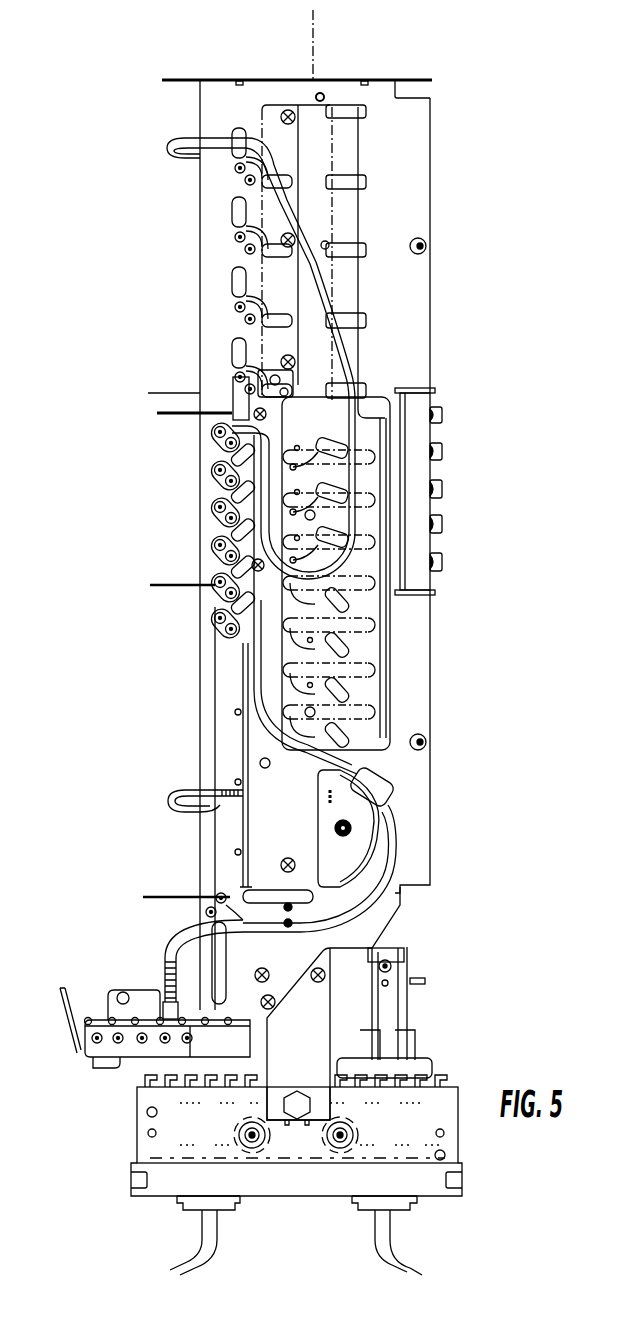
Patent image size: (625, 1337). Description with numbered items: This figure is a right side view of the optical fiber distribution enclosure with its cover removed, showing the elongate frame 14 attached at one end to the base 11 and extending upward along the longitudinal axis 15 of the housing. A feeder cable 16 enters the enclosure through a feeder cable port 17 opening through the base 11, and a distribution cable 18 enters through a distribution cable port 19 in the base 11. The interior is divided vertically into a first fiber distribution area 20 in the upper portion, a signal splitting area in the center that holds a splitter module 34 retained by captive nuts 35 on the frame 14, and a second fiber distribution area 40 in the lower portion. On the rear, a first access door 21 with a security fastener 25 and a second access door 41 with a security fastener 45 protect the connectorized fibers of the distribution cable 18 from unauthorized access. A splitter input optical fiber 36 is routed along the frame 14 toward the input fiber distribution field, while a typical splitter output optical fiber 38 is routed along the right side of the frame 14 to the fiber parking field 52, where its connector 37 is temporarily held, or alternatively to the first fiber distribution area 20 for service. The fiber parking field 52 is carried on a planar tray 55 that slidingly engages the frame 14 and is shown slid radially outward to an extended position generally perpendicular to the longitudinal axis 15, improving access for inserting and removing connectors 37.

The base 11 is at (137, 1125).
The frame 14 is at (200, 372).
The longitudinal axis 15 is at (313, 40).
The feeder cable 16 is at (412, 1252).
The feeder cable port 17 is at (405, 1218).
The distribution cable 18 is at (192, 1242).
The distribution cable port 19 is at (178, 1205).
The first fiber distribution area 20 is at (133, 282).
The first access door 21 is at (430, 167).
The security fastener 25 is at (426, 246).
The splitter module 34 is at (410, 420).
The captive nut 35 is at (443, 490).
The splitter input optical fiber 36 is at (190, 790).
The connector 37 is at (170, 985).
The splitter output optical fiber 38 is at (178, 150).
The second fiber distribution area 40 is at (133, 693).
The second access door 41 is at (430, 655).
The security fastener 45 is at (426, 742).
The fiber parking field 52 is at (110, 1042).
The tray 55 is at (108, 998).